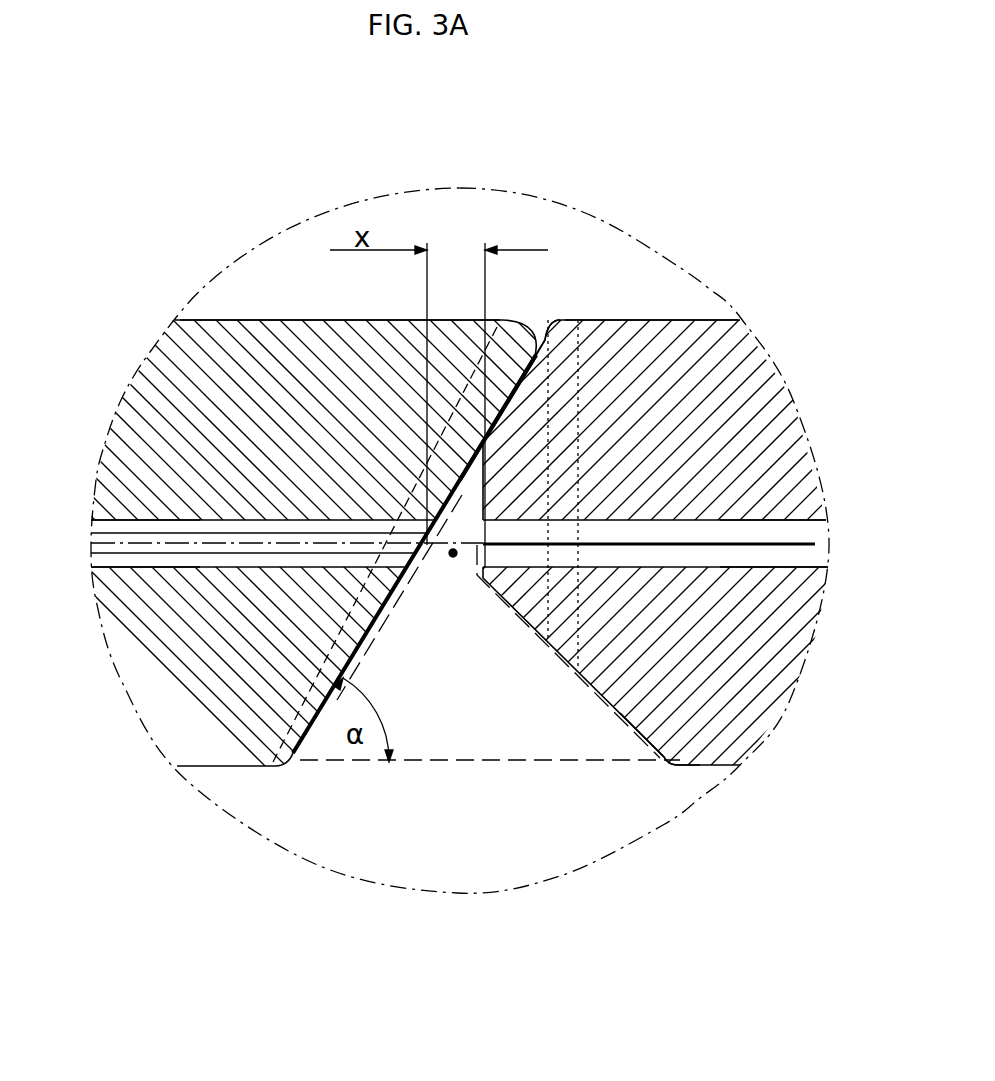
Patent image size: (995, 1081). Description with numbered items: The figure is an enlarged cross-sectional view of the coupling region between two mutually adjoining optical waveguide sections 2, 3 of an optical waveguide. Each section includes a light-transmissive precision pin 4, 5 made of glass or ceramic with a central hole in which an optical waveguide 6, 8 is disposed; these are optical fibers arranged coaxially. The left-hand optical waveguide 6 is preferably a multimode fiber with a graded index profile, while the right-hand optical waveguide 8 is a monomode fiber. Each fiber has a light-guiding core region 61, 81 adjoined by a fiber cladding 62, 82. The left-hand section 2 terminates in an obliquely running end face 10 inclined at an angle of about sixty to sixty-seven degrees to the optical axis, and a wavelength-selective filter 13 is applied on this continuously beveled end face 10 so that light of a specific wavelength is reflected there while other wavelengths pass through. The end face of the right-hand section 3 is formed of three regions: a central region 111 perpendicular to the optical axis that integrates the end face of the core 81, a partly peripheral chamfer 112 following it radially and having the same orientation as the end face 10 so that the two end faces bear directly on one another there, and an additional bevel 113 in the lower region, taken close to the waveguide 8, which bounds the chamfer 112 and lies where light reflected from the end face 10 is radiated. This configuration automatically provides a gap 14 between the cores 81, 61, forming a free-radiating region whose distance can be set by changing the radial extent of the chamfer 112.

The optical waveguide section 2 is at (148, 351).
The optical waveguide section 3 is at (800, 388).
The precision pin 4 is at (232, 330).
The precision pin 5 is at (680, 330).
The optical waveguide 6 is at (330, 526).
The optical waveguide 8 is at (700, 532).
The end face 10 is at (383, 628).
The wavelength-selective filter 13 is at (360, 648).
The gap 14 is at (453, 557).
The light-guiding core region 61 is at (92, 538).
The fiber cladding 62 is at (93, 562).
The light-guiding core region 81 is at (815, 547).
The fiber cladding 82 is at (826, 526).
The central region 111 is at (472, 478).
The partly peripheral chamfer 112 is at (535, 332).
The bevel 113 is at (674, 762).